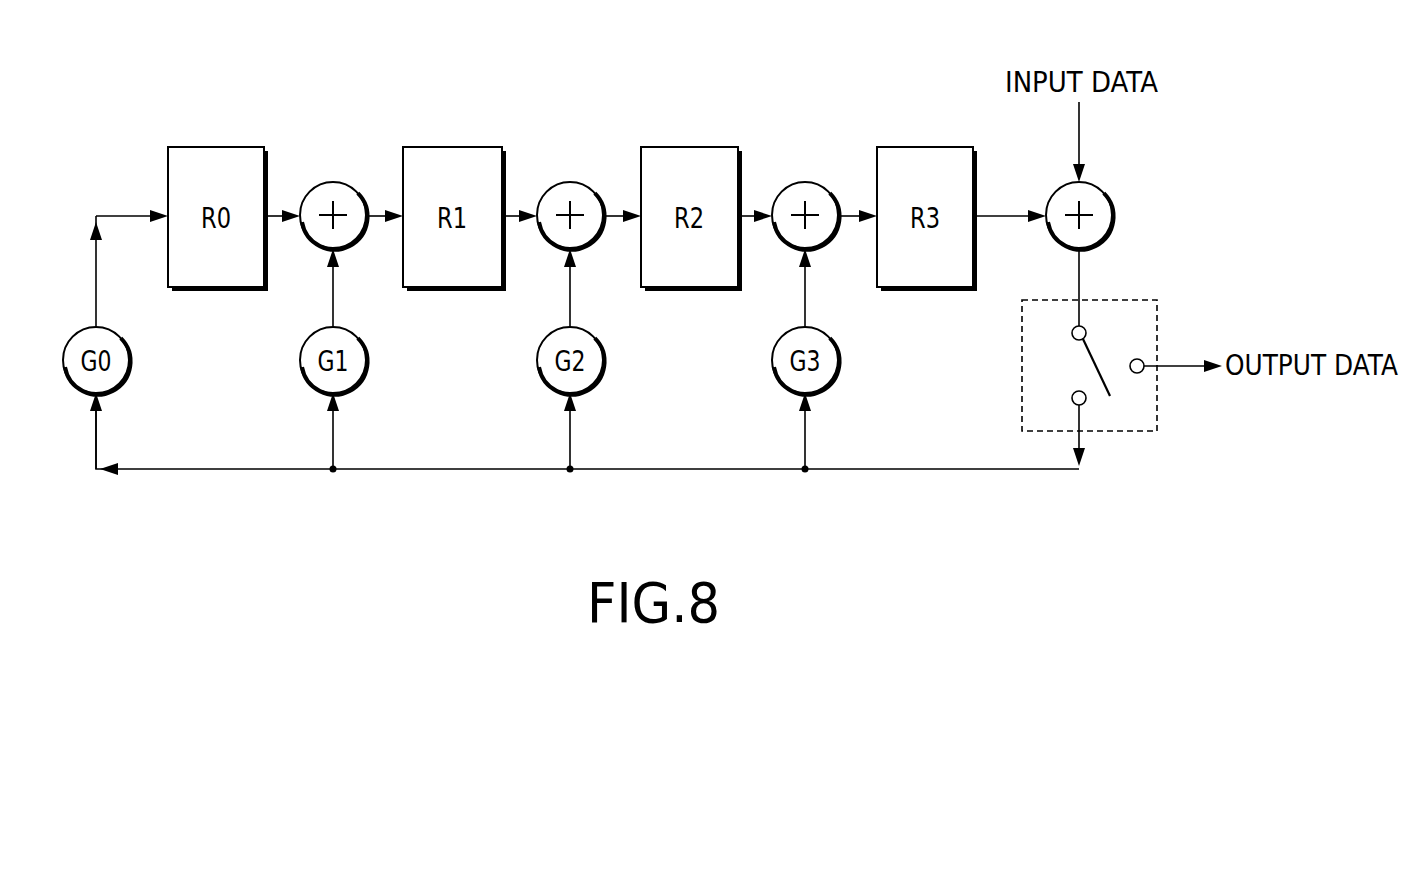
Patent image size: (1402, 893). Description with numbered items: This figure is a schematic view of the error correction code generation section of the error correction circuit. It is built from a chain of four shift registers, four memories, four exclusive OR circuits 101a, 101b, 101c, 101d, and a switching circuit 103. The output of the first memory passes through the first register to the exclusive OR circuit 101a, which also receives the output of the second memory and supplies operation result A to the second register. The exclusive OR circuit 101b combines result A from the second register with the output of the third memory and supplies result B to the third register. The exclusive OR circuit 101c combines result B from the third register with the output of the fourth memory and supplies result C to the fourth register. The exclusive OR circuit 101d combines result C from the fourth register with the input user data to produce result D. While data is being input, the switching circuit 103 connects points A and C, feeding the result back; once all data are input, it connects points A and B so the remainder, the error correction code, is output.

The exclusive OR circuit 101a is at (318, 250).
The exclusive OR circuit 101b is at (555, 250).
The exclusive OR circuit 101c is at (790, 250).
The exclusive OR circuit 101d is at (1060, 246).
The switching circuit 103 is at (1140, 300).